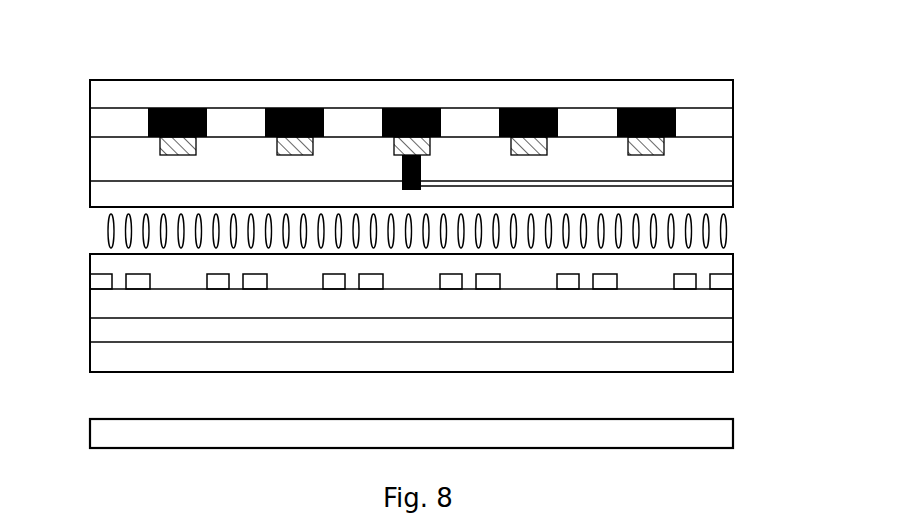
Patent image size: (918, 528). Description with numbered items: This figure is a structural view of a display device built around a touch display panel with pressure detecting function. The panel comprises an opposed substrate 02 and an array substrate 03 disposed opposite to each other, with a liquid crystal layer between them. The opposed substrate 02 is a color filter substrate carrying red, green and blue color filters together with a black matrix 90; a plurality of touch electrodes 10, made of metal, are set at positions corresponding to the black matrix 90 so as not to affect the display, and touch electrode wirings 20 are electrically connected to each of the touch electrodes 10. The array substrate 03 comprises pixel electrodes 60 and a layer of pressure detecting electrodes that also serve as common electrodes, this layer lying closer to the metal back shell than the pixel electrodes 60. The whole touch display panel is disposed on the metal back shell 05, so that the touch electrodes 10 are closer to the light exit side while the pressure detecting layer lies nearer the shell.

The opposed substrate 02 is at (90, 80).
The array substrate 03 is at (90, 254).
The metal back shell 05 is at (720, 433).
The touch electrodes 10 is at (411, 93).
The touch electrode wirings 20 is at (733, 186).
The pixel electrode 60 is at (723, 282).
The black matrix 90 is at (433, 84).